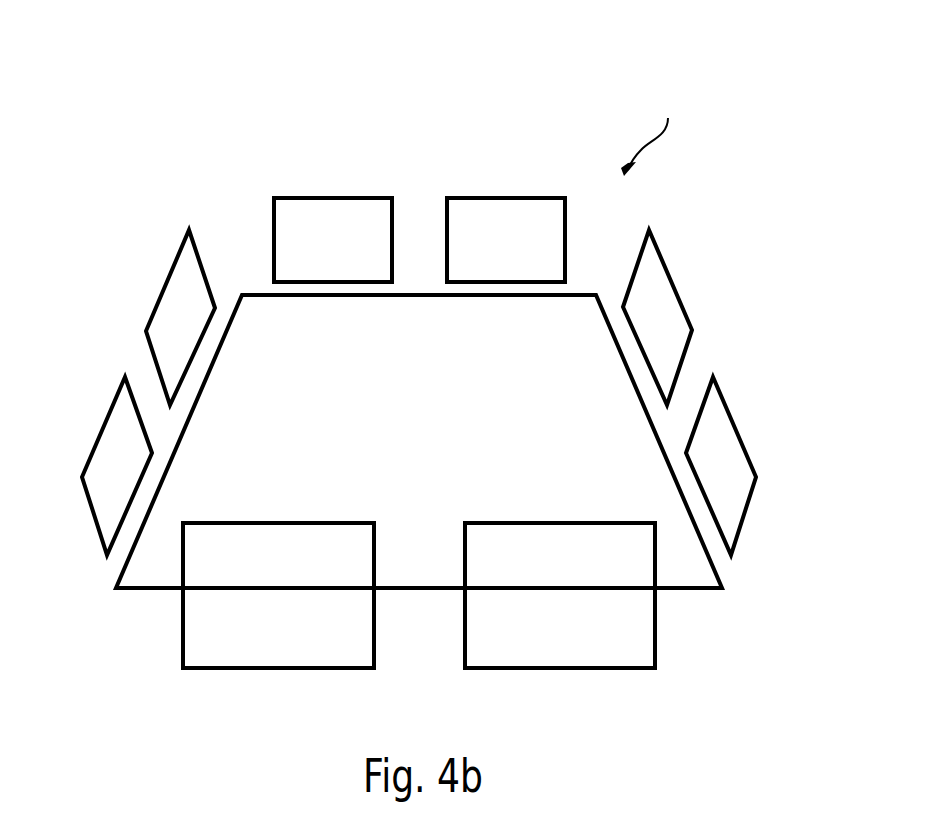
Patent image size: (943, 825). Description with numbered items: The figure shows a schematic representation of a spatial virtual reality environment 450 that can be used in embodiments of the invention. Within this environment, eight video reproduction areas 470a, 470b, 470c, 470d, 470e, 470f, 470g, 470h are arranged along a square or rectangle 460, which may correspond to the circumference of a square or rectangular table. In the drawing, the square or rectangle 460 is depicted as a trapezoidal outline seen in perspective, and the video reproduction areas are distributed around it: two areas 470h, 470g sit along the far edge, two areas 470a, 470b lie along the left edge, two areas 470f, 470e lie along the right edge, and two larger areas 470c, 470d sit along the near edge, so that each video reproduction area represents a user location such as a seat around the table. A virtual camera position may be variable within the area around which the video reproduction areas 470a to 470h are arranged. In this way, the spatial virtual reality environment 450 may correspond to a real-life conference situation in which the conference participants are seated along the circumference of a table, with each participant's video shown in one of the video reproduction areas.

The spatial virtual reality environment 450 is at (751, 331).
The square or rectangle 460 is at (420, 590).
The video reproduction area 470a is at (165, 282).
The video reproduction area 470b is at (102, 430).
The video reproduction area 470c is at (183, 632).
The video reproduction area 470d is at (655, 628).
The video reproduction area 470e is at (737, 420).
The video reproduction area 470f is at (672, 280).
The video reproduction area 470g is at (503, 198).
The video reproduction area 470h is at (331, 198).